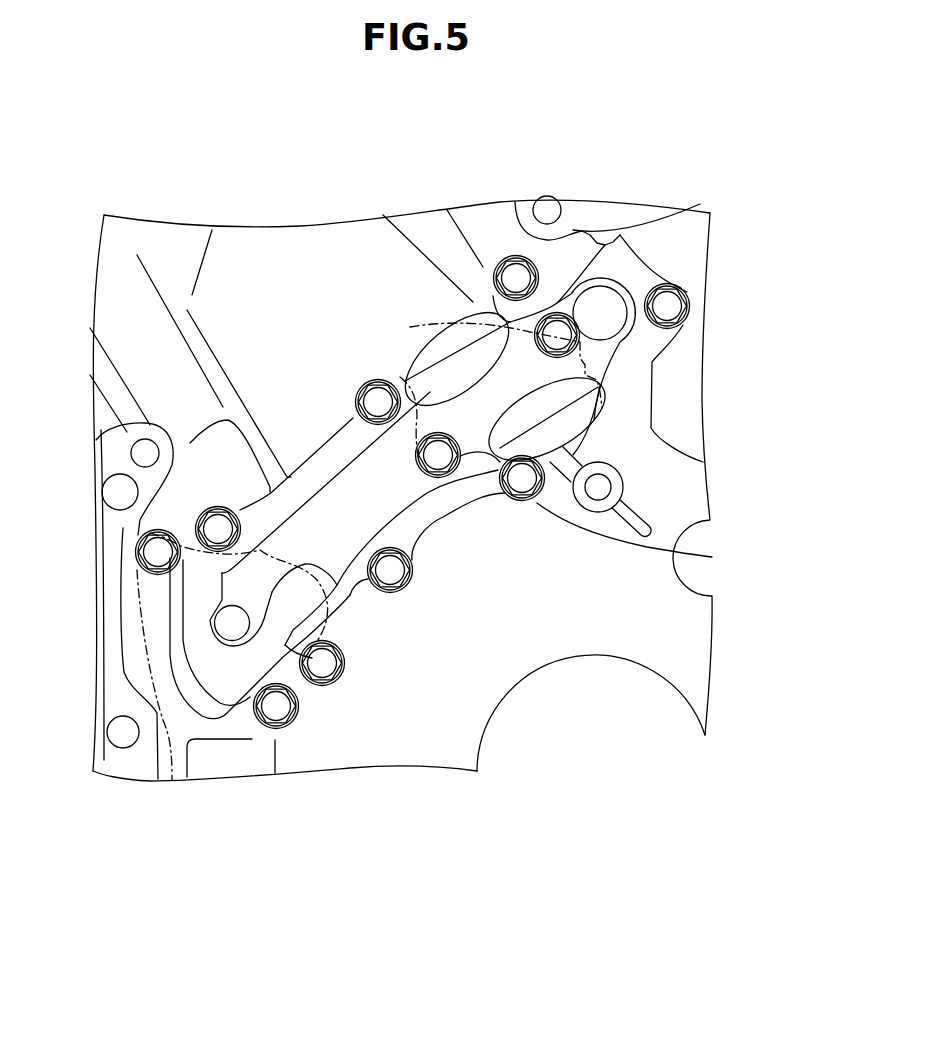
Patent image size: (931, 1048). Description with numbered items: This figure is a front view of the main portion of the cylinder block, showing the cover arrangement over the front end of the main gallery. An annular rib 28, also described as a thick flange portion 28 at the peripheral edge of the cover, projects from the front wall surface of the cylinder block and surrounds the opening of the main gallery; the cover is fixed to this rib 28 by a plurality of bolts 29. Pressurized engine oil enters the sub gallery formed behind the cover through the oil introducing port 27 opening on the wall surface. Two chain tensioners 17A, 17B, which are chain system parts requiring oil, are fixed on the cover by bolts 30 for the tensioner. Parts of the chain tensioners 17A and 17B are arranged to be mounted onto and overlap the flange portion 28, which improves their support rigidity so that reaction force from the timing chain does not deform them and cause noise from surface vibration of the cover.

The chain tensioner 17A is at (173, 775).
The chain tensioner 17B is at (605, 390).
The oil introducing port 27 is at (232, 625).
The rib 28 is at (447, 500).
The bolt 29 is at (375, 395).
The bolt for the tensioner 30 is at (440, 452).